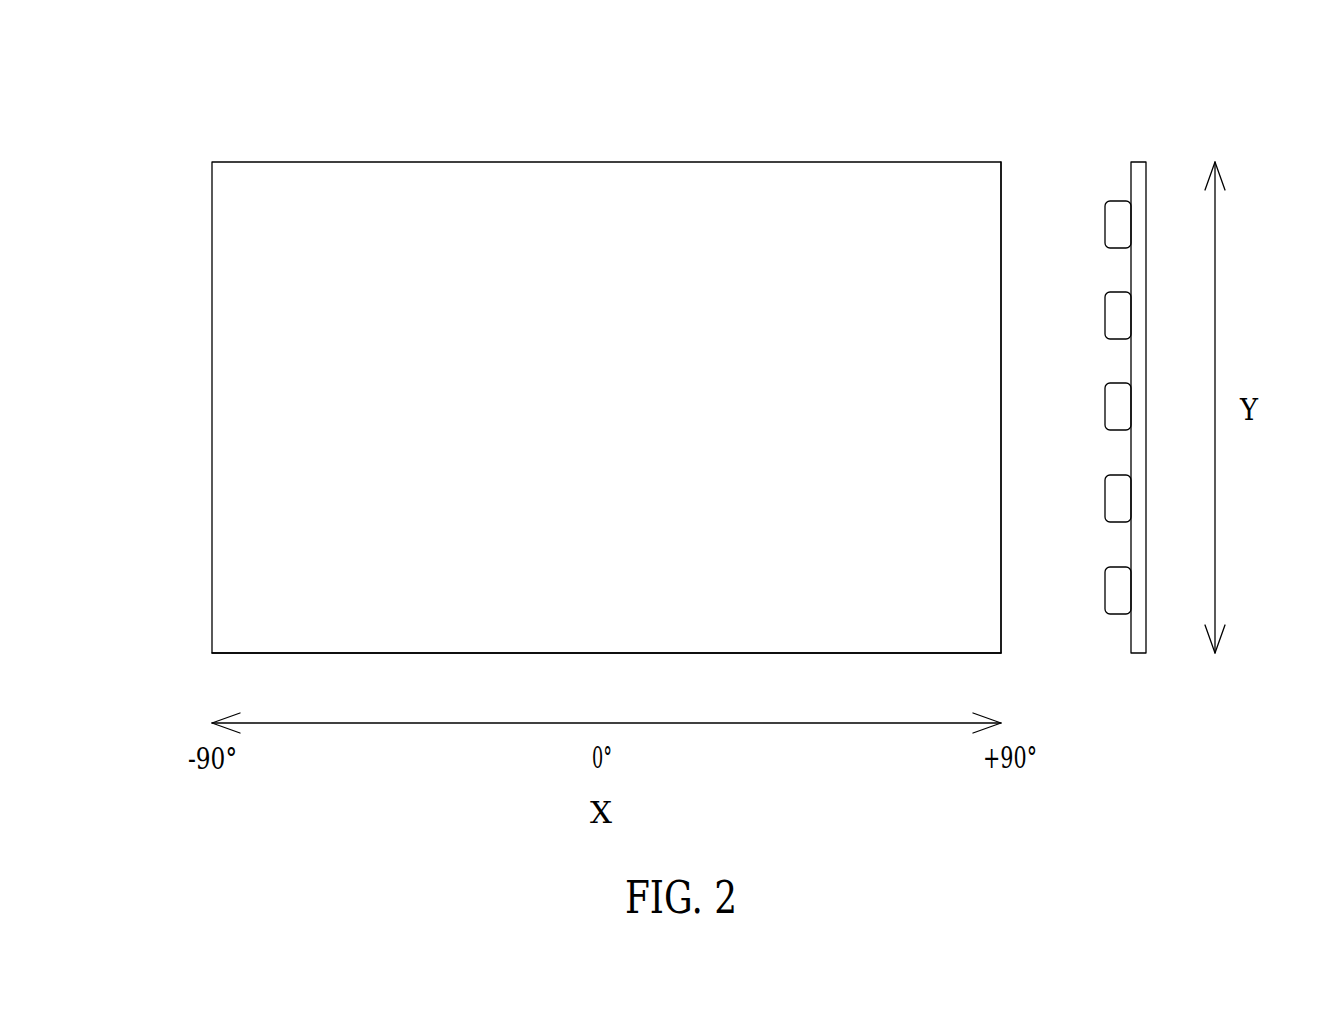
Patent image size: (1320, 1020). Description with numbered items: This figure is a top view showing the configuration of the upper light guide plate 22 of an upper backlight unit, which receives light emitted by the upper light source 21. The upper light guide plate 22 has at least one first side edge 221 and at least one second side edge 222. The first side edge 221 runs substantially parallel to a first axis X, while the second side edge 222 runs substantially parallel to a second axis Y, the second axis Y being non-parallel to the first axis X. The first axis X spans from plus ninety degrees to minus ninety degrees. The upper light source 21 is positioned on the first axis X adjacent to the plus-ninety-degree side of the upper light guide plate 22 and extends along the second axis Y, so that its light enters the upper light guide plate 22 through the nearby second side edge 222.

The upper light source 21 is at (1147, 178).
The upper light guide plate 22 is at (252, 160).
The first side edge 221 is at (233, 655).
The second side edge 222 is at (1001, 187).